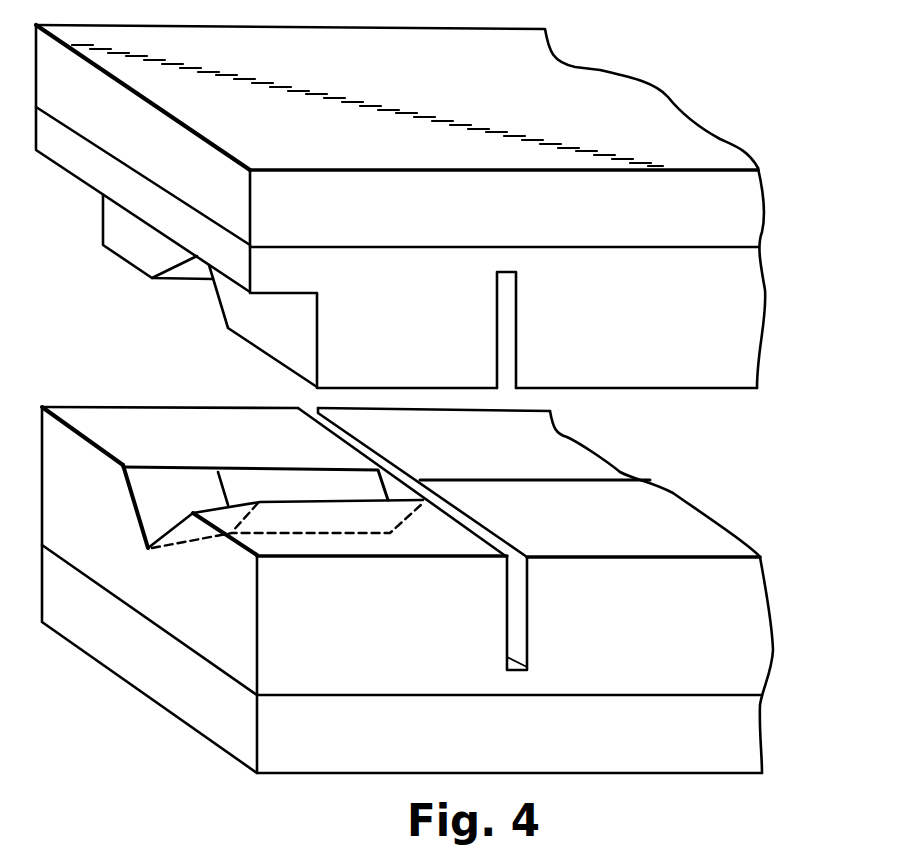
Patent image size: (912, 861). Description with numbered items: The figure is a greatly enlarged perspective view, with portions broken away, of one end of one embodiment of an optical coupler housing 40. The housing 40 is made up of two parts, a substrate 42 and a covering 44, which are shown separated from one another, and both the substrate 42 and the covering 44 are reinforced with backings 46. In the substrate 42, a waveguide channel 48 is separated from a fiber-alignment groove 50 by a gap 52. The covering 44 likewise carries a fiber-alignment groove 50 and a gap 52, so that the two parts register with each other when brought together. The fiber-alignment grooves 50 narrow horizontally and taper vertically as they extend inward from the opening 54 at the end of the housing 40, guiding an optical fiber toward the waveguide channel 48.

The housing 40 is at (426, 417).
The substrate 42 is at (360, 660).
The covering 44 is at (736, 376).
The backings 46 is at (735, 198).
The waveguide channel 48 is at (620, 478).
The fiber-alignment groove 50 is at (202, 272).
The gap 52 is at (343, 433).
The opening 54 is at (143, 477).